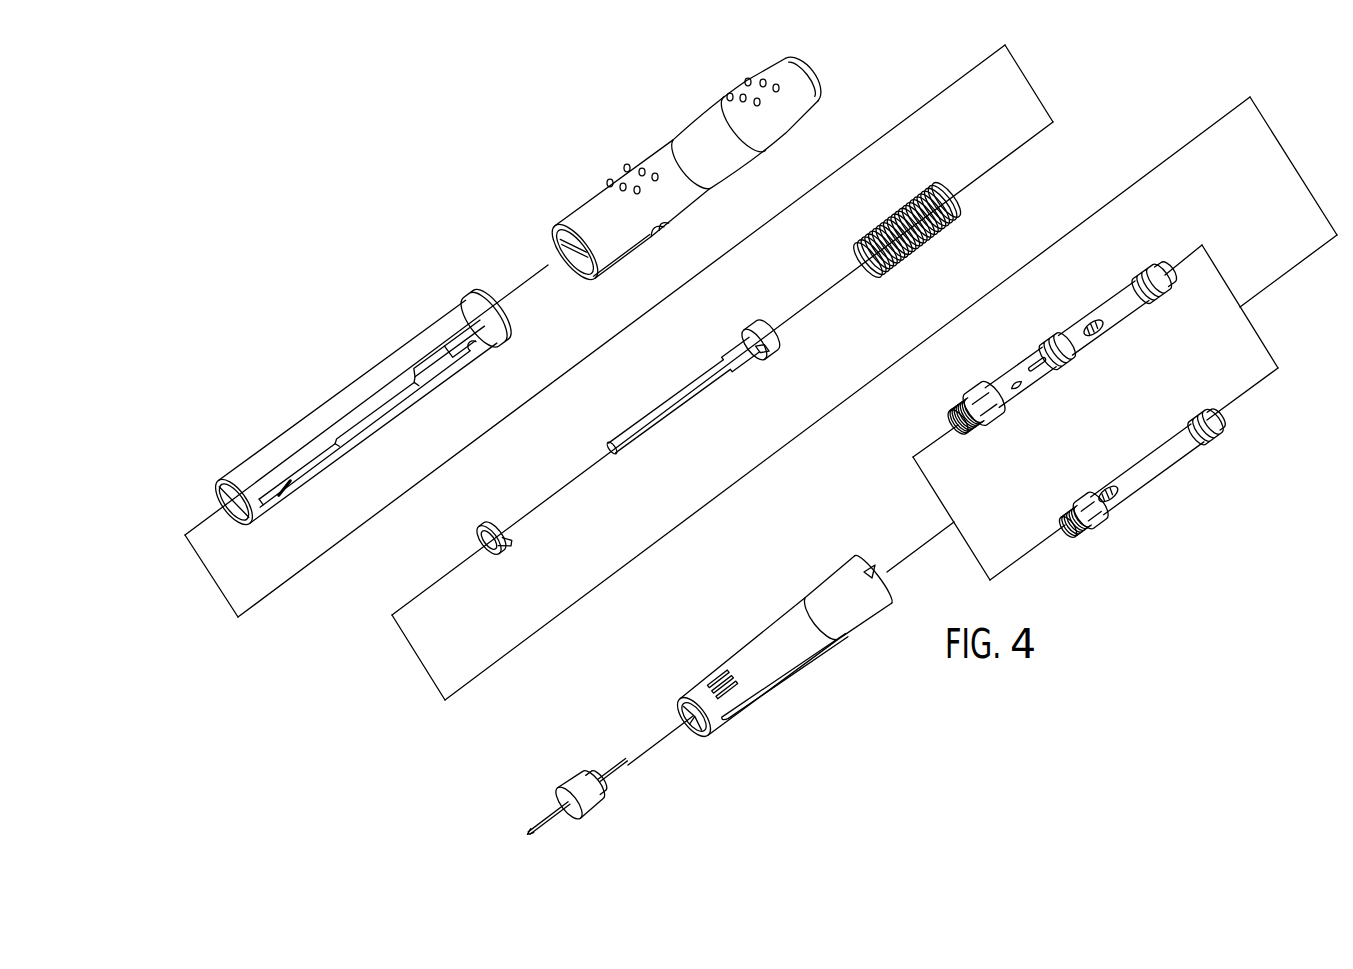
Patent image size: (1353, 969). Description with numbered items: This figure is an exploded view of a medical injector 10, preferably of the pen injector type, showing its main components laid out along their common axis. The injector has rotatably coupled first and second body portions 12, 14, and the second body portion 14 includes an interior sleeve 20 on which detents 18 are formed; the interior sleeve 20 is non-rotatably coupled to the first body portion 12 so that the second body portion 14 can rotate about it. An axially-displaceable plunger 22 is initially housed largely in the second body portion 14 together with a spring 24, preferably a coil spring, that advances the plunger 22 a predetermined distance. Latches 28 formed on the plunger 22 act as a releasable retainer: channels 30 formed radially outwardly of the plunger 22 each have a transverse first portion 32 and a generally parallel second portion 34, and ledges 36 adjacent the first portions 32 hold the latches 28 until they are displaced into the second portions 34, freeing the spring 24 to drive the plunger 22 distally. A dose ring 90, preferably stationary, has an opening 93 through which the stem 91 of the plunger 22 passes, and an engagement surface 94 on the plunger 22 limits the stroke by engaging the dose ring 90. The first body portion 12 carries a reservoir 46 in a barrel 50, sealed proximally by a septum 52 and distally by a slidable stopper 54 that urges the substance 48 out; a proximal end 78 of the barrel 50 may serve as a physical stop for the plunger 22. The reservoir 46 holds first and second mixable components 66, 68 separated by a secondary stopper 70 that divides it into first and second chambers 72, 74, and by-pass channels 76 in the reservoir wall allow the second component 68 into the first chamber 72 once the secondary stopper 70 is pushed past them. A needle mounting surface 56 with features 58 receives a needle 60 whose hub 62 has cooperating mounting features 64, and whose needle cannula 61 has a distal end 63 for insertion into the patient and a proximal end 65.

The medical injector 10 is at (463, 214).
The first body portion 12 is at (777, 617).
The second body portion 14 is at (613, 182).
The detents 18 is at (234, 501).
The interior sleeve 20 is at (363, 412).
The plunger 22 is at (697, 396).
The spring 24 is at (897, 213).
The latches 28 is at (760, 340).
The channels 30 is at (376, 414).
The first portion 32 is at (460, 344).
The second portion 34 is at (373, 417).
The ledges 36 is at (448, 348).
The reservoir 46 is at (1073, 405).
The substance 48 is at (1108, 494).
The barrel 50 is at (1086, 398).
The septum 52 is at (964, 418).
The stopper 54 is at (1167, 273).
The needle mounting surface 56 is at (983, 403).
The features 58 is at (1086, 398).
The needle 60 is at (570, 791).
The needle cannula 61 is at (549, 818).
The hub 62 is at (580, 794).
The distal end 63 is at (530, 833).
The mounting features 64 is at (598, 781).
The proximal end 65 is at (613, 769).
The first mixable component 66 is at (1016, 385).
The second mixable component 68 is at (1093, 328).
The secondary stopper 70 is at (1037, 364).
The first chamber 72 is at (1020, 377).
The second chamber 74 is at (1103, 318).
The by-pass channels 76 is at (1057, 351).
The proximal end 78 is at (1151, 283).
The dose ring 90 is at (470, 524).
The stem 91 is at (681, 397).
The opening 93 is at (487, 522).
The engagement surface 94 is at (763, 348).